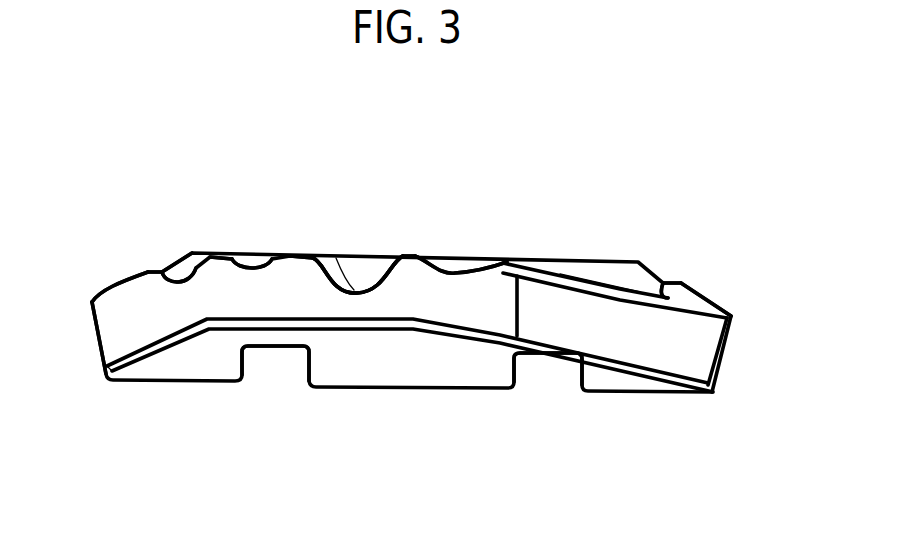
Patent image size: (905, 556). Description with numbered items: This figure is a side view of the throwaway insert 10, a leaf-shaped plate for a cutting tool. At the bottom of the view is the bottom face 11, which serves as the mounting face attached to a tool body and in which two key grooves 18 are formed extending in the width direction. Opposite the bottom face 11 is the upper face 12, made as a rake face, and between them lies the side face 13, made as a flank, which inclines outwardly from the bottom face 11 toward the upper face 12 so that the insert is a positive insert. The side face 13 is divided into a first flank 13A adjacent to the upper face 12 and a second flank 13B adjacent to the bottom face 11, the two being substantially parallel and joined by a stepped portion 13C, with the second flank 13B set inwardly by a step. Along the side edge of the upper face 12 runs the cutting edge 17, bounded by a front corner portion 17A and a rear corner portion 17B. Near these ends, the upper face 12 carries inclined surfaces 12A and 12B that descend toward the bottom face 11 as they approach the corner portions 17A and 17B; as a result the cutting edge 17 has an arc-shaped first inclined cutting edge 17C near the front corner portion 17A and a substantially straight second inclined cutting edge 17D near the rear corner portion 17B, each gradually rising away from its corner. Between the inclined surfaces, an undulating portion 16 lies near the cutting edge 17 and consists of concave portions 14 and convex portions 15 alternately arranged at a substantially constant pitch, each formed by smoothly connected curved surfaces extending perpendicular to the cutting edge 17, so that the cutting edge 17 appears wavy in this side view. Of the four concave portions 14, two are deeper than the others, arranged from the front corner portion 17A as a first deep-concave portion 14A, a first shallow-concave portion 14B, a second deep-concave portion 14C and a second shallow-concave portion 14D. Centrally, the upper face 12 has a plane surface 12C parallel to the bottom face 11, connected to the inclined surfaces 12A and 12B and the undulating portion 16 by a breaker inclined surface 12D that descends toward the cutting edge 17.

The throwaway insert 10 is at (667, 186).
The bottom face 11 is at (418, 389).
The upper face 12 is at (558, 260).
The inclined surface 12A is at (118, 280).
The inclined surface 12B is at (707, 308).
The plane surface 12C is at (594, 282).
The breaker inclined surface 12D is at (366, 283).
The side face 13 is at (182, 465).
The first flank 13A is at (123, 360).
The second flank 13B is at (162, 372).
The stepped portion 13C is at (180, 333).
The concave portions 14 is at (336, 207).
The first deep-concave portion 14A is at (183, 266).
The first shallow-concave portion 14B is at (260, 266).
The second deep-concave portion 14C is at (382, 262).
The second shallow-concave portion 14D is at (462, 264).
The convex portions 15 is at (155, 268).
The undulating portion 16 is at (335, 257).
The cutting edge 17 is at (598, 288).
The corner portion 17A is at (92, 302).
The corner portion 17B is at (733, 320).
The first inclined cutting edge 17C is at (134, 269).
The second inclined cutting edge 17D is at (690, 288).
The key grooves 18 is at (270, 350).